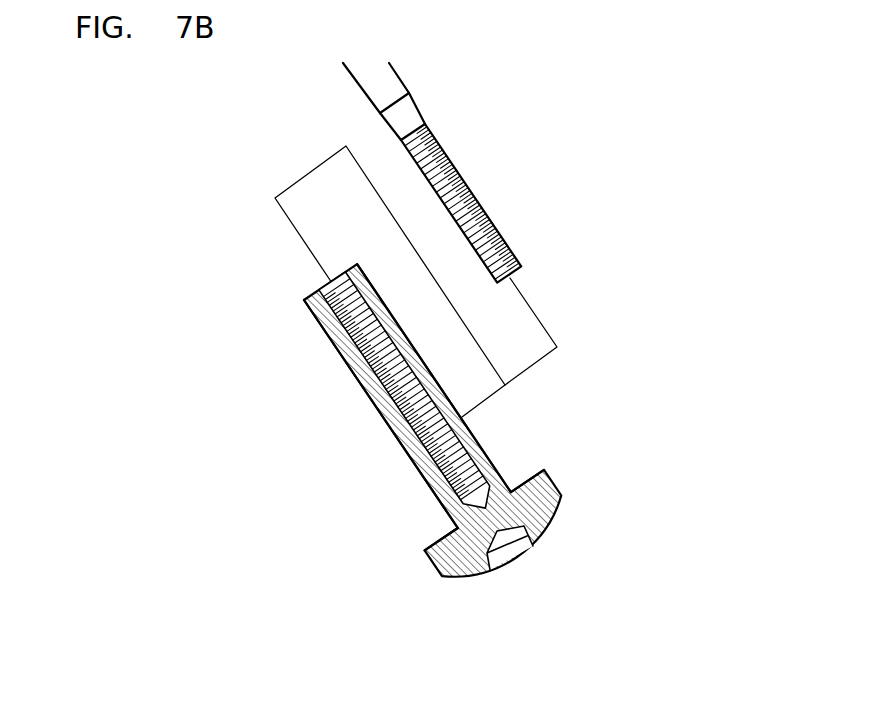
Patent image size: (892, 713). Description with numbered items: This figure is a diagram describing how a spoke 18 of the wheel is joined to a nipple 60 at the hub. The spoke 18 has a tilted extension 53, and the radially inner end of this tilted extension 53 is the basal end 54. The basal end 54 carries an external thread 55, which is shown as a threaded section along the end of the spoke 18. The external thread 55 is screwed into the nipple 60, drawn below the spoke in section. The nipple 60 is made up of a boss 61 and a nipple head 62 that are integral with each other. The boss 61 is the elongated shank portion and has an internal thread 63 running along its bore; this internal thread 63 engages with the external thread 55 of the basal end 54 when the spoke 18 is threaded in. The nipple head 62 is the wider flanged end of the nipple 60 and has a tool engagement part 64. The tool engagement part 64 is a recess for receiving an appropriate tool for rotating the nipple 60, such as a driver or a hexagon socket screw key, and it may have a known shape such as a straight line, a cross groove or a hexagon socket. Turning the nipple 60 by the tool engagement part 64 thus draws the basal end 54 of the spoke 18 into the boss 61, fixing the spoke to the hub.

The spoke 18 is at (477, 147).
The tilted extension 53 is at (357, 74).
The basal end 54 is at (521, 268).
The external thread 55 is at (472, 197).
The nipple 60 is at (568, 499).
The boss 61 is at (392, 430).
The nipple head 62 is at (548, 527).
The internal thread 63 is at (333, 341).
The tool engagement part 64 is at (513, 548).